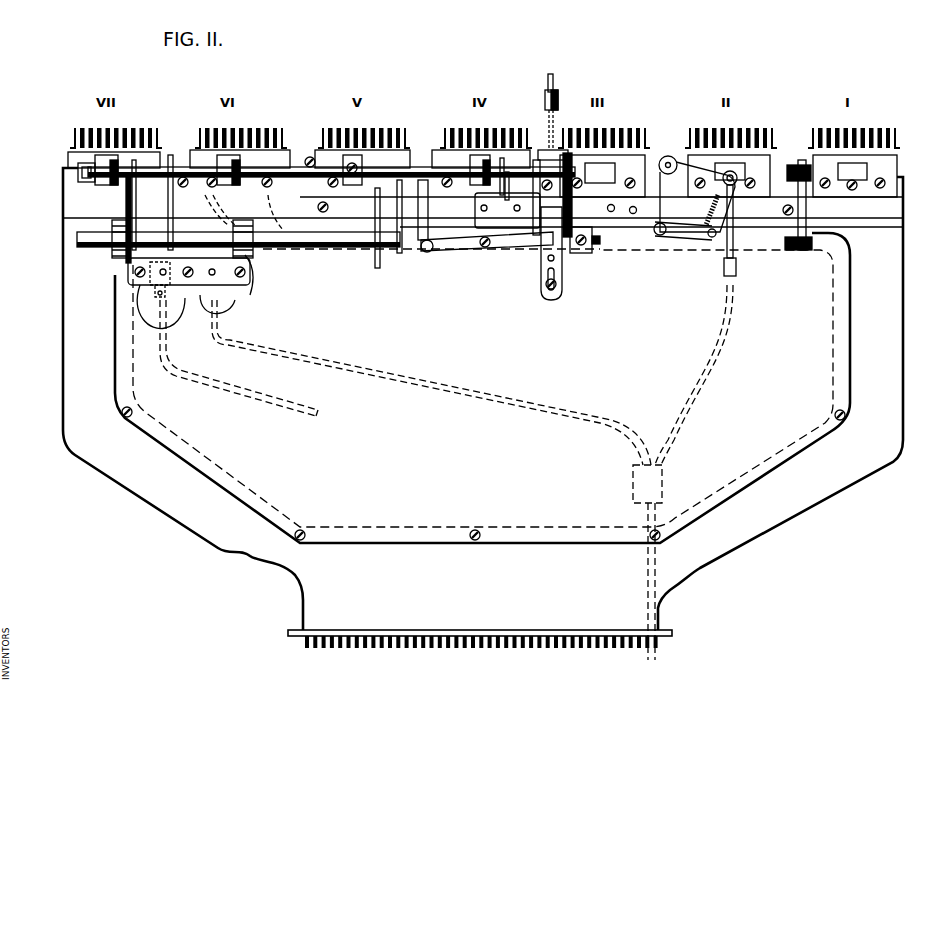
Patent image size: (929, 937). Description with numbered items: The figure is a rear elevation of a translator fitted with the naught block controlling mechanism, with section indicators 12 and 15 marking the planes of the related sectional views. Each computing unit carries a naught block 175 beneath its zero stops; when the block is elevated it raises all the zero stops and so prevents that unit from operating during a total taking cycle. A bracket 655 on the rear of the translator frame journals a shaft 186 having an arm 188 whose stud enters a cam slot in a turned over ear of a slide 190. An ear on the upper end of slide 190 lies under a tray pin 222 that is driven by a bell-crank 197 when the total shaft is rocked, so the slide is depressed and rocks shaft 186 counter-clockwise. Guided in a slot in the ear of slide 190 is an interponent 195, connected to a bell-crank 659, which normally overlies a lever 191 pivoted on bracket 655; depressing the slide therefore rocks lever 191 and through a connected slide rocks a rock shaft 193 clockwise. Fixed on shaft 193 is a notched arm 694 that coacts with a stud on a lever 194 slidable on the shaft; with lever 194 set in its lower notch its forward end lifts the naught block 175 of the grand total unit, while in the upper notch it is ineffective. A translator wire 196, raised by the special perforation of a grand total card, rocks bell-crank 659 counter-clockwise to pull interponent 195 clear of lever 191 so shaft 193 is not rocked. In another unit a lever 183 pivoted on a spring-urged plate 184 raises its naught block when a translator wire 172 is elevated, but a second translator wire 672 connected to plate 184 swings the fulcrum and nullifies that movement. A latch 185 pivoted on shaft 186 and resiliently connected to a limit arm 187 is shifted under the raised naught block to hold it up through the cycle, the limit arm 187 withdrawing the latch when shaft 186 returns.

The section line 12- 12 is at (530, 321).
The section line 15- 15 is at (397, 310).
The translator wire 172 is at (213, 305).
The naught block 175 is at (160, 150).
The lever 183 is at (198, 308).
The plate 184 is at (150, 290).
The latch 185 is at (136, 182).
The shaft 186 is at (108, 252).
The limit arm 187 is at (135, 205).
The arm 188 is at (576, 210).
The slide 190 is at (545, 150).
The lever 191 is at (467, 250).
The rock shaft 193 is at (80, 176).
The lever 194 is at (118, 186).
The interponent 195 is at (697, 232).
The translator wire 196 is at (736, 268).
The bell-crank 197 is at (553, 78).
The tray pin 222 is at (558, 113).
The bracket 655 is at (416, 215).
The bell-crank 659 is at (428, 216).
The translator wire 672 is at (280, 415).
The arm 694 is at (307, 160).